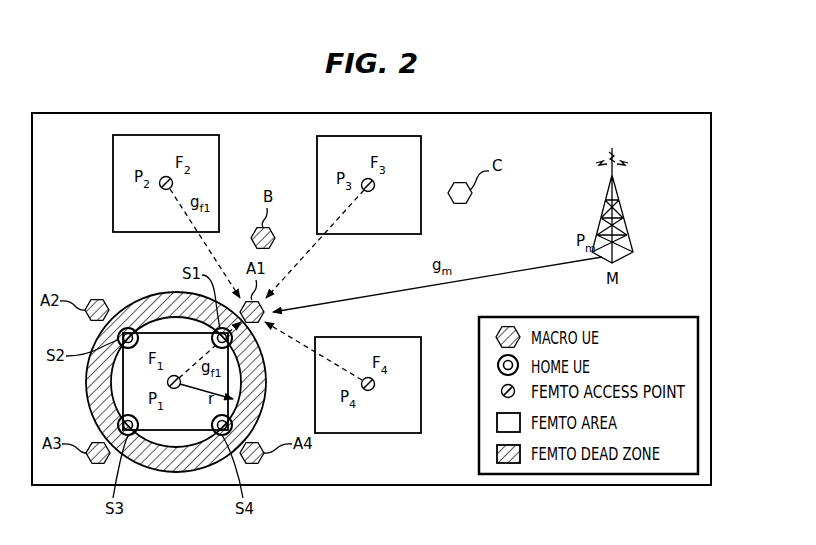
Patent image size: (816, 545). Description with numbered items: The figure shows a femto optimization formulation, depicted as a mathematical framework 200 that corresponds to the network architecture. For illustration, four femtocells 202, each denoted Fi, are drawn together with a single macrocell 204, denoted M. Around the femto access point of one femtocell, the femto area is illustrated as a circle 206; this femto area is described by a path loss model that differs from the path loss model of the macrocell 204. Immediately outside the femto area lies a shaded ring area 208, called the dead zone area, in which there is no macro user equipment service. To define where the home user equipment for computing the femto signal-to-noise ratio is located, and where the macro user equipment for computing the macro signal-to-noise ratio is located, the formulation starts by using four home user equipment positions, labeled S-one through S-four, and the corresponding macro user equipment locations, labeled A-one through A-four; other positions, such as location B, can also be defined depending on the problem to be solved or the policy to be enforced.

The mathematical framework 200 is at (711, 181).
The femtocells 202 is at (219, 156).
The macrocell 204 is at (612, 180).
The femto area circle 206 is at (161, 188).
The dead zone ring area 208 is at (159, 292).